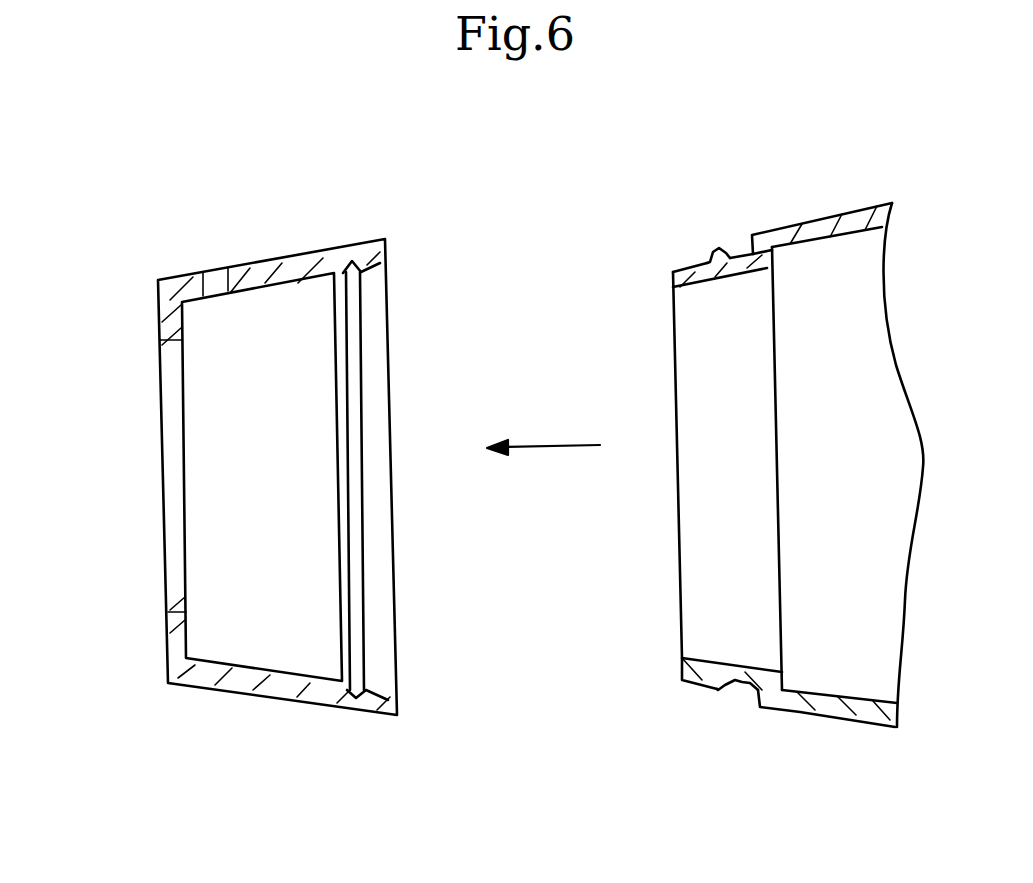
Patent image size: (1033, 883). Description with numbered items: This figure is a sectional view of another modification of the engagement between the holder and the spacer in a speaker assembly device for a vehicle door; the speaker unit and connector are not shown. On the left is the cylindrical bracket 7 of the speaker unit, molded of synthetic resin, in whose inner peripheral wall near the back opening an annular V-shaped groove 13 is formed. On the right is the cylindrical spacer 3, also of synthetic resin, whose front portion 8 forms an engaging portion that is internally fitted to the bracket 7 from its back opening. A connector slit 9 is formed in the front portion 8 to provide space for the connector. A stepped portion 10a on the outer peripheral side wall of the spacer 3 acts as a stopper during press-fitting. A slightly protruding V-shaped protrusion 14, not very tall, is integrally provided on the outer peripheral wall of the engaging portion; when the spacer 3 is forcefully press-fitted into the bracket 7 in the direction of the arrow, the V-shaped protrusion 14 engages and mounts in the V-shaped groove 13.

The spacer 3 is at (757, 494).
The bracket 7 is at (218, 532).
The front portion 8 is at (702, 572).
The connector slit 9 is at (690, 272).
The stepped portion 10a is at (750, 243).
The V-shaped groove 13 is at (341, 497).
The V-shaped protrusion 14 is at (713, 253).